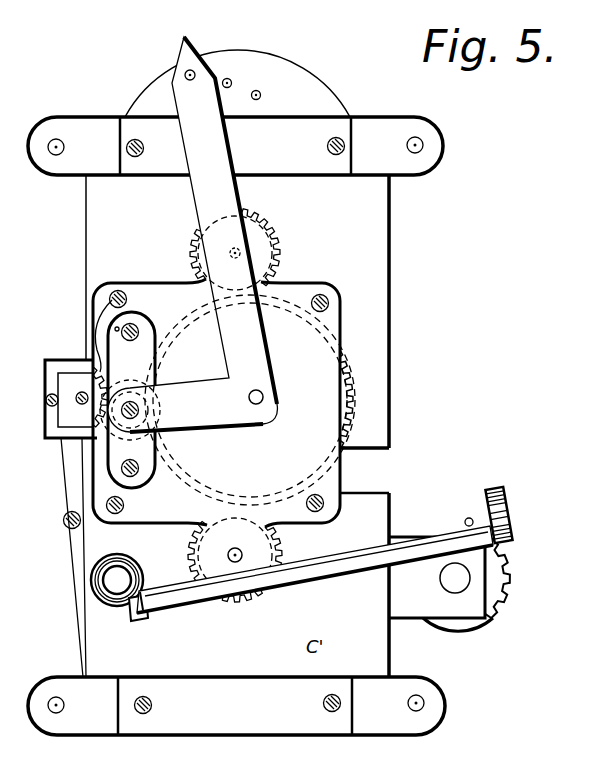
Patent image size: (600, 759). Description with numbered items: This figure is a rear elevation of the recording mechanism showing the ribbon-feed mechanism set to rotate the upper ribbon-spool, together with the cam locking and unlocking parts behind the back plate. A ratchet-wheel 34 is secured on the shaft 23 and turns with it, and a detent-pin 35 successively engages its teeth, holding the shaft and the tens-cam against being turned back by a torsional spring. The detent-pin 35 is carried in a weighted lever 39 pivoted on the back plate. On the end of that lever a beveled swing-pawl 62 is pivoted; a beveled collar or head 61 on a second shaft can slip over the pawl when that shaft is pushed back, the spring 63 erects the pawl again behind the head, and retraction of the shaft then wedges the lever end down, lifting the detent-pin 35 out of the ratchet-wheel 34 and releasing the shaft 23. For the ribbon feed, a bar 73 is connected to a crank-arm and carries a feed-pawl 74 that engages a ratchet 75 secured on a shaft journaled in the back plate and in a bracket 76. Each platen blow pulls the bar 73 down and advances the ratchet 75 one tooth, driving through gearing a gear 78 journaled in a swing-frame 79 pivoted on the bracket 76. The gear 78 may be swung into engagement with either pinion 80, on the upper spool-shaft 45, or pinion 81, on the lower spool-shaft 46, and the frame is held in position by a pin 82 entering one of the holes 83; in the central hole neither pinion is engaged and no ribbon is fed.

The shaft 23 is at (437, 577).
The ratchet-wheel 34 is at (479, 584).
The detent-pin 35 is at (469, 518).
The weighted lever 39 is at (315, 569).
The spool-shaft 45 is at (235, 253).
The spool-shaft 46 is at (238, 545).
The beveled collar or head 61 is at (128, 574).
The beveled swing-pawl 62 is at (143, 620).
The spring 63 is at (160, 590).
The bar 73 is at (62, 557).
The feed-pawl 74 is at (77, 388).
The ratchet 75 is at (92, 418).
The bracket 76 is at (131, 400).
The gear 78 is at (357, 403).
The swing-frame 79 is at (192, 234).
The pinion 80 is at (249, 247).
The pinion 81 is at (235, 570).
The pin 82 is at (192, 70).
The holes 83 is at (258, 90).